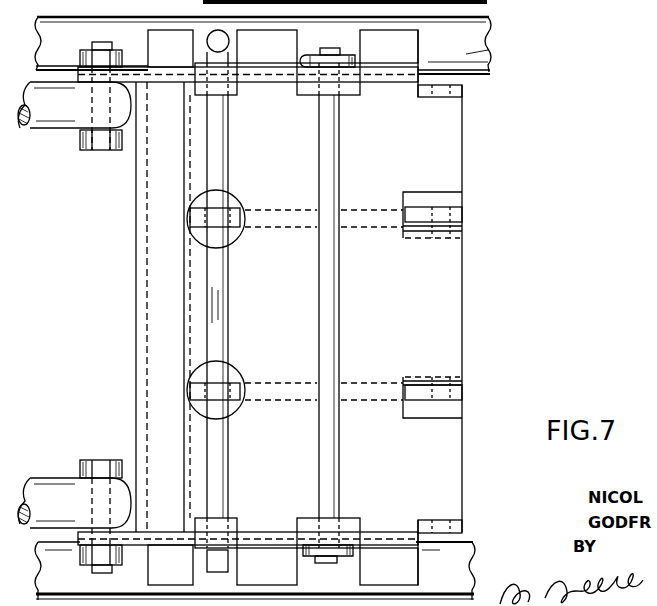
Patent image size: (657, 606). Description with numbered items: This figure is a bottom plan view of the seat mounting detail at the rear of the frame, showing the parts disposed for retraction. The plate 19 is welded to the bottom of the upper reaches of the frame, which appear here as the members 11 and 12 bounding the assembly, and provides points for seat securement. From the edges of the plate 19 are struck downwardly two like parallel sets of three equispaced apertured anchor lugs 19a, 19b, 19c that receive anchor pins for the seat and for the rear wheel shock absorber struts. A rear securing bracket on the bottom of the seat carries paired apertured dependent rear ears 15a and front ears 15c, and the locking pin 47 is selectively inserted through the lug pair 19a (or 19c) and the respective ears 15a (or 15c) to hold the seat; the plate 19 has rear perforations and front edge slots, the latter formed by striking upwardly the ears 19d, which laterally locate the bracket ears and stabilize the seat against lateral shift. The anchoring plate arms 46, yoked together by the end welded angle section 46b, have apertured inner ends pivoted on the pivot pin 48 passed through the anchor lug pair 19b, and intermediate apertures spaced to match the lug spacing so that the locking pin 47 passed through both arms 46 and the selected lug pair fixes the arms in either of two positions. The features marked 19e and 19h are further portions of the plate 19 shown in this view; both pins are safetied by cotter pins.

The upper plate 11 is at (495, 60).
The lower plate 12 is at (462, 554).
The rear ears 15a is at (242, 395).
The front ears 15c is at (461, 214).
The plate 19 is at (297, 307).
The anchor lug 19a is at (233, 518).
The anchor lug 19b is at (348, 518).
The anchor lug 19c is at (422, 97).
The ears 19d is at (440, 234).
The frame step 19e is at (407, 191).
The frame boss 19h is at (252, 190).
The anchoring plate arms 46 is at (145, 545).
The end welded angle section 46b is at (163, 182).
The locking pin 47 is at (222, 294).
The pivot pin 48 is at (338, 262).